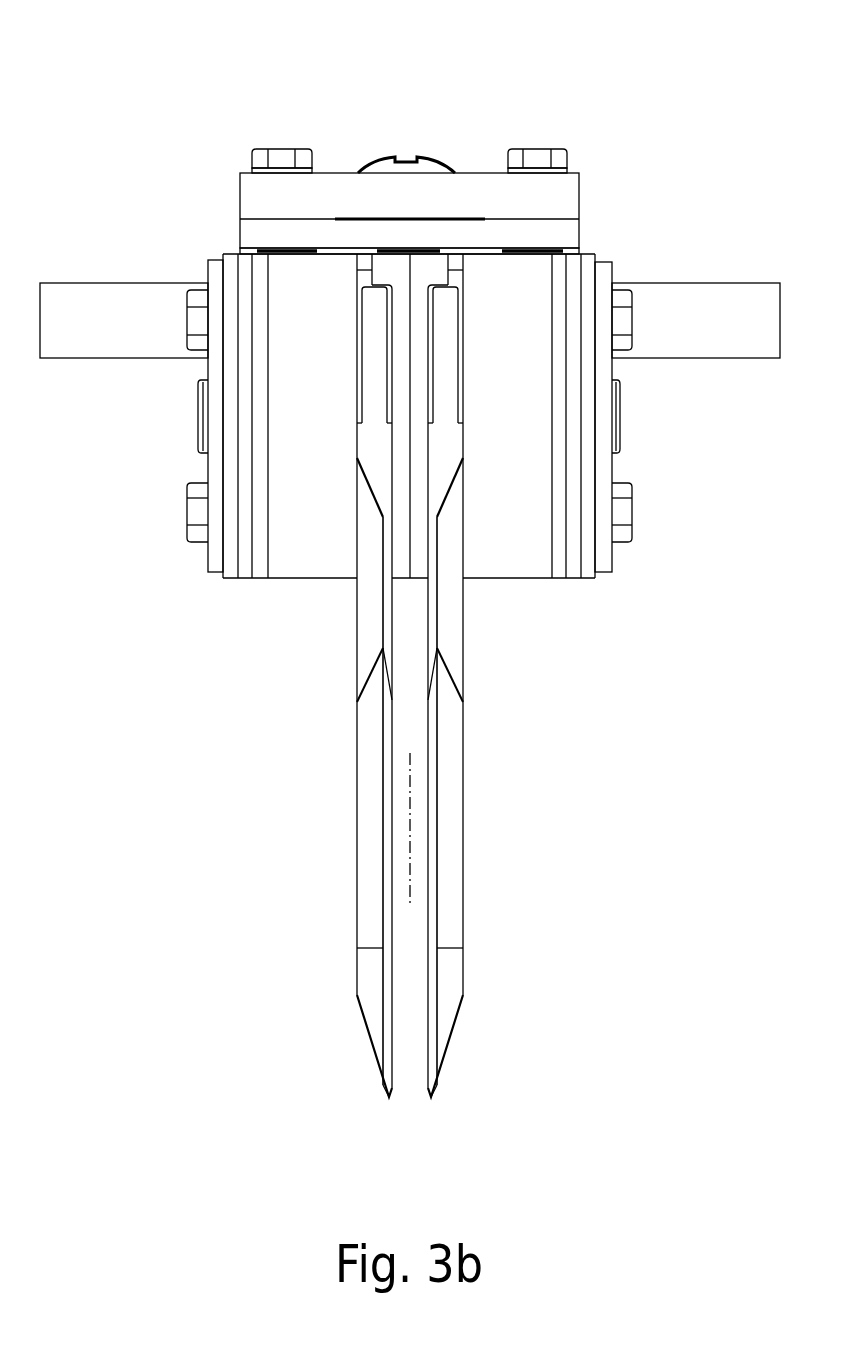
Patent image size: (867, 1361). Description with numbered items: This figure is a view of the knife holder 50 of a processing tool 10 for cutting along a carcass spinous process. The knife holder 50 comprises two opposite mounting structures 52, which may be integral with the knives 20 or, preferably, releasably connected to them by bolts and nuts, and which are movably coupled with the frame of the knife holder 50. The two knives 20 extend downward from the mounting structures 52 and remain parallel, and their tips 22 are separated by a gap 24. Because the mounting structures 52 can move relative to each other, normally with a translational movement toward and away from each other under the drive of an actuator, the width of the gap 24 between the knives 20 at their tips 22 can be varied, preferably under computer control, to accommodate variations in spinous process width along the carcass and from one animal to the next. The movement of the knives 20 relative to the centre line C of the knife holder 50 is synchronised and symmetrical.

The fluid dispensing device 10 is at (389, 104).
The knife 20 is at (375, 907).
The knife tip 22 is at (388, 1099).
The gap 24 is at (413, 1090).
The knife holder 50 is at (633, 470).
The mounting structure 52 is at (302, 547).
The centre line C is at (410, 822).